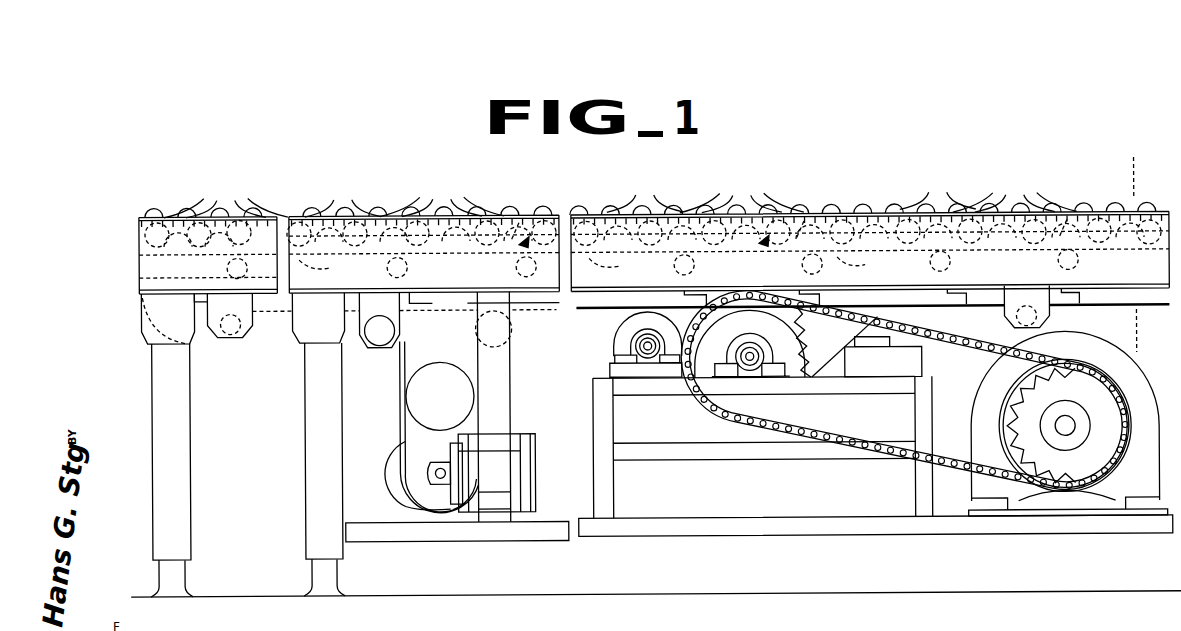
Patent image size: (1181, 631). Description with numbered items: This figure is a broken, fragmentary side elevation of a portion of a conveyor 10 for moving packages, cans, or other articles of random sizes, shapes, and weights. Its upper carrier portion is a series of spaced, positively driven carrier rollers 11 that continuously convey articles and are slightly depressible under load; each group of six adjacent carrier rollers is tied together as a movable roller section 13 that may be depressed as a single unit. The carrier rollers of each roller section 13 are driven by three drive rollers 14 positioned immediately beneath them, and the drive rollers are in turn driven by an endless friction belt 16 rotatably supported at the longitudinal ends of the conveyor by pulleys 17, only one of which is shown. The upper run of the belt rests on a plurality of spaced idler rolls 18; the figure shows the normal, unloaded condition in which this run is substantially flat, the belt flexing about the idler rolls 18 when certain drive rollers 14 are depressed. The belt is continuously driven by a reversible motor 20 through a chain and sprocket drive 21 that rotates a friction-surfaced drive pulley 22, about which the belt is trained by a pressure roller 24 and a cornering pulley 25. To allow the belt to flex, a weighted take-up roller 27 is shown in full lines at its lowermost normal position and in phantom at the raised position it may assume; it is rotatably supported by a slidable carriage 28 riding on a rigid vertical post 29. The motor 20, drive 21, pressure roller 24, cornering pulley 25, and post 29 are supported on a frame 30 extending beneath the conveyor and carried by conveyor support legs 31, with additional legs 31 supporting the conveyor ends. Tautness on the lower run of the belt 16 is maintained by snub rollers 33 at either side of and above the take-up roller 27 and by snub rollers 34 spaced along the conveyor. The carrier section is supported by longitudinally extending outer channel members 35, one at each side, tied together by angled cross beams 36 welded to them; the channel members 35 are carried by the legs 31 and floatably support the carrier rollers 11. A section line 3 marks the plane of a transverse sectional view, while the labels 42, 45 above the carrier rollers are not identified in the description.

The conveyor 10 is at (925, 161).
The carrier rollers 11 is at (620, 195).
The roller section 13 is at (250, 234).
The drive rollers 14 is at (314, 260).
The endless friction belt 16 is at (140, 252).
The pulleys 17 is at (140, 275).
The idler rolls 18 is at (262, 268).
The reversible motor 20 is at (1010, 367).
The chain and sprocket drive 21 is at (855, 430).
The drive pulley 22 is at (852, 357).
The pressure roller 24 is at (616, 342).
The cornering pulley 25 is at (905, 334).
The take-up roller 27 is at (403, 408).
The slidable carriage 28 is at (520, 434).
The rigid vertical post 29 is at (508, 372).
The frame 30 is at (306, 541).
The conveyor support legs 31 is at (310, 406).
The snub rollers 33 is at (478, 338).
The snub rollers 34 is at (248, 331).
The outer channel members 35 is at (165, 240).
The angled cross beams 36 is at (1124, 296).
The article group 42 is at (640, 194).
The article group 45 is at (528, 216).
The section line 3 is at (1180, 172).